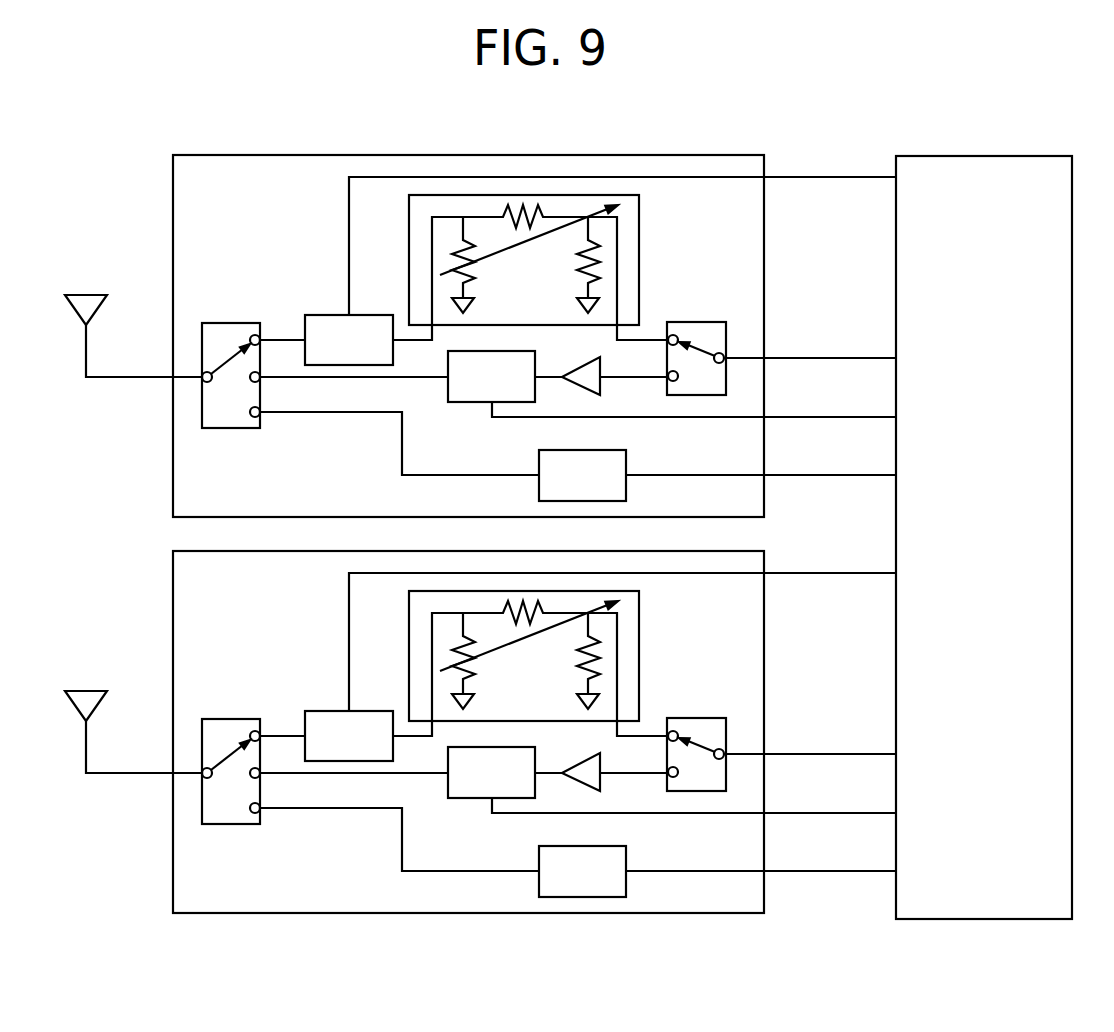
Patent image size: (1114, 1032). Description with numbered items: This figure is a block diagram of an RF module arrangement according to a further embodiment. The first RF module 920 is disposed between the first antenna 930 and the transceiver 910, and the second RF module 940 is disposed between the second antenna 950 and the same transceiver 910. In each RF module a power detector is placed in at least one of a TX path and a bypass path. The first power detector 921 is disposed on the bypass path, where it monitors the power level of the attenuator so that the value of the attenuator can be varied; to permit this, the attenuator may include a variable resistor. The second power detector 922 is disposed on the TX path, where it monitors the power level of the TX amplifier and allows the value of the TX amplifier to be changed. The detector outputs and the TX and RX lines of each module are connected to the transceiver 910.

The transceiver 910 is at (983, 155).
The first RF module 920 is at (173, 172).
The first power detector 921 is at (316, 315).
The second power detector 922 is at (468, 402).
The first antenna 930 is at (86, 295).
The second RF module 940 is at (173, 568).
The second antenna 950 is at (86, 691).